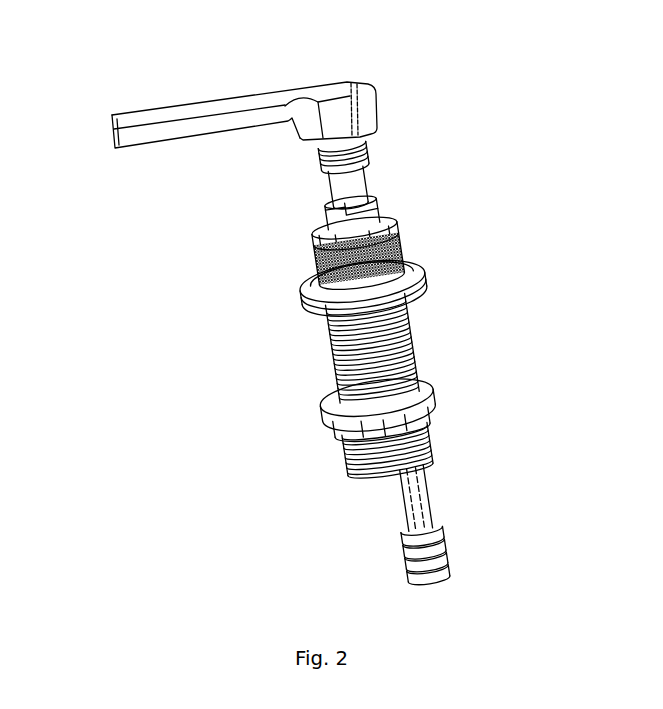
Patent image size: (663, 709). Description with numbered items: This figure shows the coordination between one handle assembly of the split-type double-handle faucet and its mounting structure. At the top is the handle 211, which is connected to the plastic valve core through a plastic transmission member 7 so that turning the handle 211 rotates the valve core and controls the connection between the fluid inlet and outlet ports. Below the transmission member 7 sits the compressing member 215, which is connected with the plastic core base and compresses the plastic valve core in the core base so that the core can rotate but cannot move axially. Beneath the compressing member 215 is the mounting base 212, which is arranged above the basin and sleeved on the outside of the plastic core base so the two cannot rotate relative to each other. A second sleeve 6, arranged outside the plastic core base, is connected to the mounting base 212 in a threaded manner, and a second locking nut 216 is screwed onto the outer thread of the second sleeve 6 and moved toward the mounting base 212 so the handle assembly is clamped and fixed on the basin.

The handle 211 is at (233, 102).
The plastic transmission member 7 is at (328, 190).
The compressing member 215 is at (400, 245).
The mounting base 212 is at (423, 280).
The second sleeve 6 is at (410, 355).
The second locking nut 216 is at (433, 403).